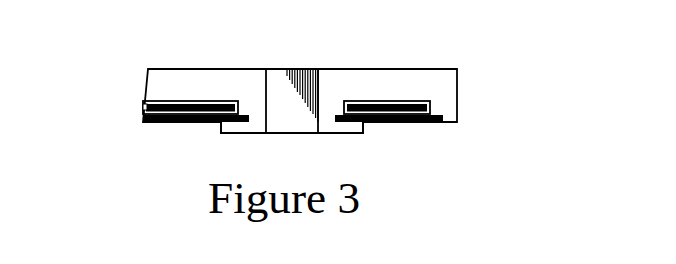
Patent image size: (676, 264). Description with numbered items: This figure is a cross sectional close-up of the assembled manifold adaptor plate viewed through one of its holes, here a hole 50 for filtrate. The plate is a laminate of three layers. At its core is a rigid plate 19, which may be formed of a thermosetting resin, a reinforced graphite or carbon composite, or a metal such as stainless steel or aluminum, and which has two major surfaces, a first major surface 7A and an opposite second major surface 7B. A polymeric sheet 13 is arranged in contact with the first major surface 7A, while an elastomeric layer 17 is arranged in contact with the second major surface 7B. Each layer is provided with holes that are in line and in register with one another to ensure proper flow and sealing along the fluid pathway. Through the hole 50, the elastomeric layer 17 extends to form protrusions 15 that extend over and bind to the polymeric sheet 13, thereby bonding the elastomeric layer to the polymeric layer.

The first major surface 7A is at (176, 100).
The second major surface 7B is at (143, 115).
The polymeric sheet 13 is at (405, 122).
The protrusions 15 is at (345, 133).
The elastomeric layer 17 is at (438, 87).
The rigid plate 19 is at (143, 107).
The holes for filtrate 50 is at (283, 90).